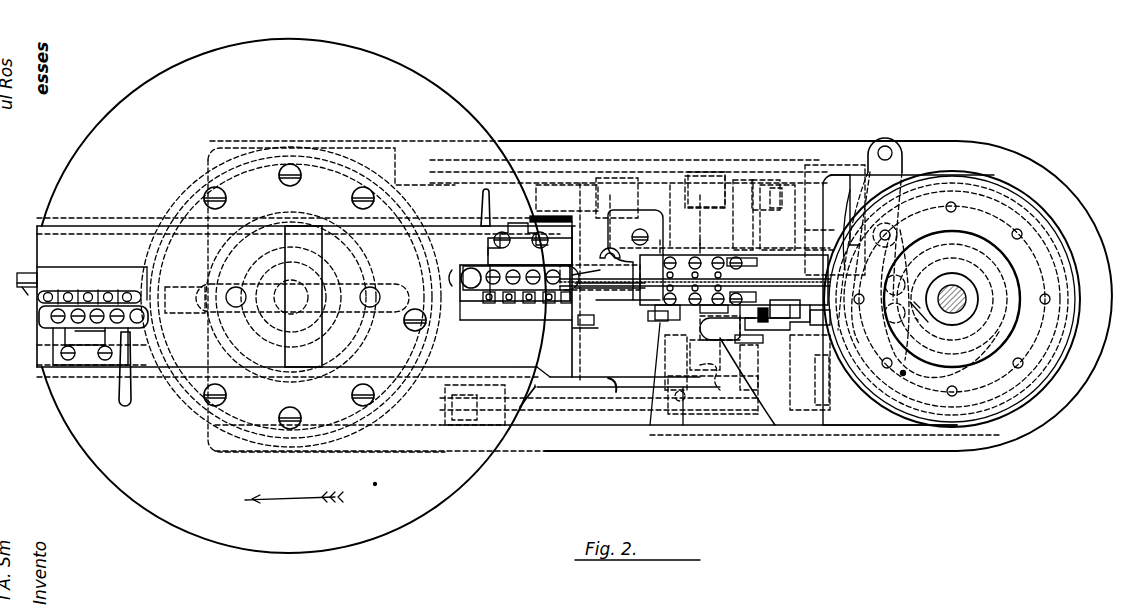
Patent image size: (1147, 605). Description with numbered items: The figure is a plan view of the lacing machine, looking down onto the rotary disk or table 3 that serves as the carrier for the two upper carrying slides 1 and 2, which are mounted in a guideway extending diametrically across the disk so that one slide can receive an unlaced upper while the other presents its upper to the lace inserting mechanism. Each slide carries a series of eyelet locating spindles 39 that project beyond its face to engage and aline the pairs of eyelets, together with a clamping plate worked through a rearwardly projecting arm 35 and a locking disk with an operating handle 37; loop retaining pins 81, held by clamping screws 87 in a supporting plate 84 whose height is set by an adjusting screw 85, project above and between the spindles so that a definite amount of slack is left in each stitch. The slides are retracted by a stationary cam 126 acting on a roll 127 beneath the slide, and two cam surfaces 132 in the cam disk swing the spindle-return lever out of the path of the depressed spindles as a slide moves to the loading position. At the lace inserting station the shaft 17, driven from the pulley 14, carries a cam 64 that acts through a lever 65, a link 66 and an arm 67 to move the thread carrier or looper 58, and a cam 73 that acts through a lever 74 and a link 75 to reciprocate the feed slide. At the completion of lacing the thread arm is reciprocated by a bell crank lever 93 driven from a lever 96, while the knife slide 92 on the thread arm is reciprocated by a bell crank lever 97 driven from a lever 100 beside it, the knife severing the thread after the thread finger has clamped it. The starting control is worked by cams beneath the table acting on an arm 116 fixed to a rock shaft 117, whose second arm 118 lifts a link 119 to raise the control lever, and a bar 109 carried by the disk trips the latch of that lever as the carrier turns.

The upper carrying slide 1 is at (563, 232).
The upper carrying slide 2 is at (38, 343).
The rotary disk or table 3 is at (418, 503).
The pulley 14 is at (616, 392).
The shaft 17 is at (967, 297).
The rearwardly projecting arm 35 is at (484, 252).
The operating handle 37 is at (484, 190).
The spindles 39 is at (89, 292).
The thread carrier or looper 58 is at (620, 288).
The cam 64 is at (968, 224).
The lever 65 is at (870, 160).
The link 66 is at (845, 235).
The arm 67 is at (640, 252).
The cam 73 is at (904, 378).
The lever 74 is at (906, 225).
The link 75 is at (848, 252).
The loop retaining pins 81 is at (512, 305).
The supporting plate 84 is at (475, 268).
The adjusting screw 85 is at (470, 282).
The clamping screws 87 is at (495, 272).
The knife slide 92 is at (705, 282).
The bell crank lever 93 is at (783, 300).
The lever 96 is at (750, 182).
The bell crank lever 97 is at (803, 325).
The lever 100 is at (812, 165).
The bar 109 is at (40, 311).
The arm 116 is at (452, 398).
The rock shaft 117 is at (566, 395).
The second arm 118 is at (716, 365).
The link 119 is at (805, 443).
The stationary cam 126 is at (392, 251).
The roll 127 is at (260, 288).
The cam surfaces 132 is at (345, 195).